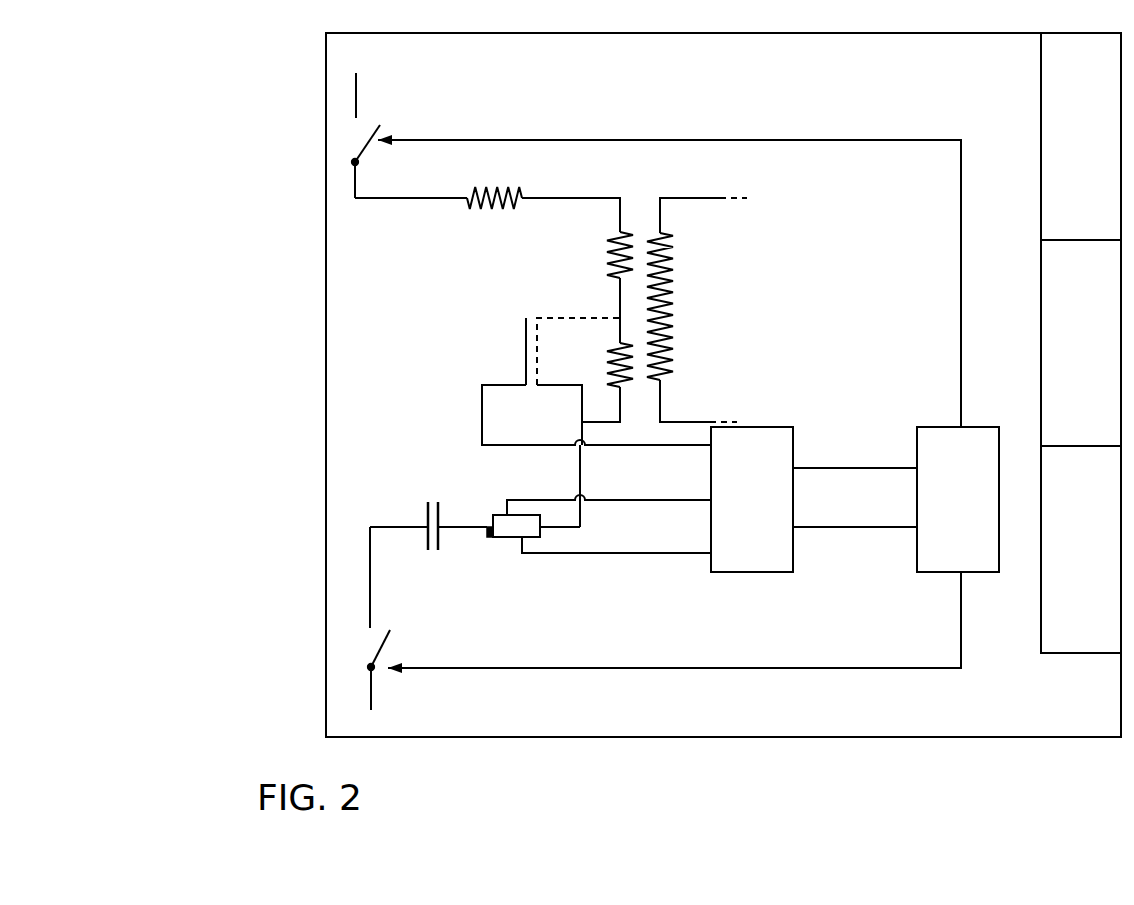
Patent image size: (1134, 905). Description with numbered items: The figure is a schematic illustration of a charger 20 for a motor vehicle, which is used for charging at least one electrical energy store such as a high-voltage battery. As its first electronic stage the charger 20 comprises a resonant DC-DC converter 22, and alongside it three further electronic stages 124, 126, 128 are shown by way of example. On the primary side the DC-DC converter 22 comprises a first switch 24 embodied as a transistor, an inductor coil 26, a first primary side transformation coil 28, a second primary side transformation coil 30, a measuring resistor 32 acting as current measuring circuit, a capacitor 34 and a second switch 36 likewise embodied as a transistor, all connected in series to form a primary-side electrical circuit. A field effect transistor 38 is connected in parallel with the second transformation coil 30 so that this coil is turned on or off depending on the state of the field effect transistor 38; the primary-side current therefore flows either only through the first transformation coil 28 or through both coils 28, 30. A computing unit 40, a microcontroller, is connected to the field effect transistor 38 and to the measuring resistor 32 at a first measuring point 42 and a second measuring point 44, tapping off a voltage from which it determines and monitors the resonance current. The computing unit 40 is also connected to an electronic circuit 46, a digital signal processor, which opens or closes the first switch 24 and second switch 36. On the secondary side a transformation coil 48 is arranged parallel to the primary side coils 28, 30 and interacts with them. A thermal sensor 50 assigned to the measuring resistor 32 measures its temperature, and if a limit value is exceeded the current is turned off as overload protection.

The charger 20 is at (300, 187).
The resonant DC-DC converter 22 is at (733, 123).
The first switch 24 is at (378, 106).
The inductor coil 26 is at (530, 185).
The first primary side transformation coil 28 is at (583, 257).
The second primary side transformation coil 30 is at (602, 350).
The measuring resistor 32 is at (502, 552).
The capacitor 34 is at (420, 483).
The second switch 36 is at (348, 653).
The field effect transistor 38 is at (505, 350).
The computing unit 40 is at (814, 499).
The first measuring point 42 is at (495, 502).
The second measuring point 44 is at (547, 538).
The electronic circuit 46 is at (693, 547).
The secondary side transformation coil 48 is at (691, 312).
The thermal sensor 50 is at (478, 538).
The electronic stage 124 is at (1081, 136).
The electronic stage 126 is at (1081, 343).
The electronic stage 128 is at (1081, 549).